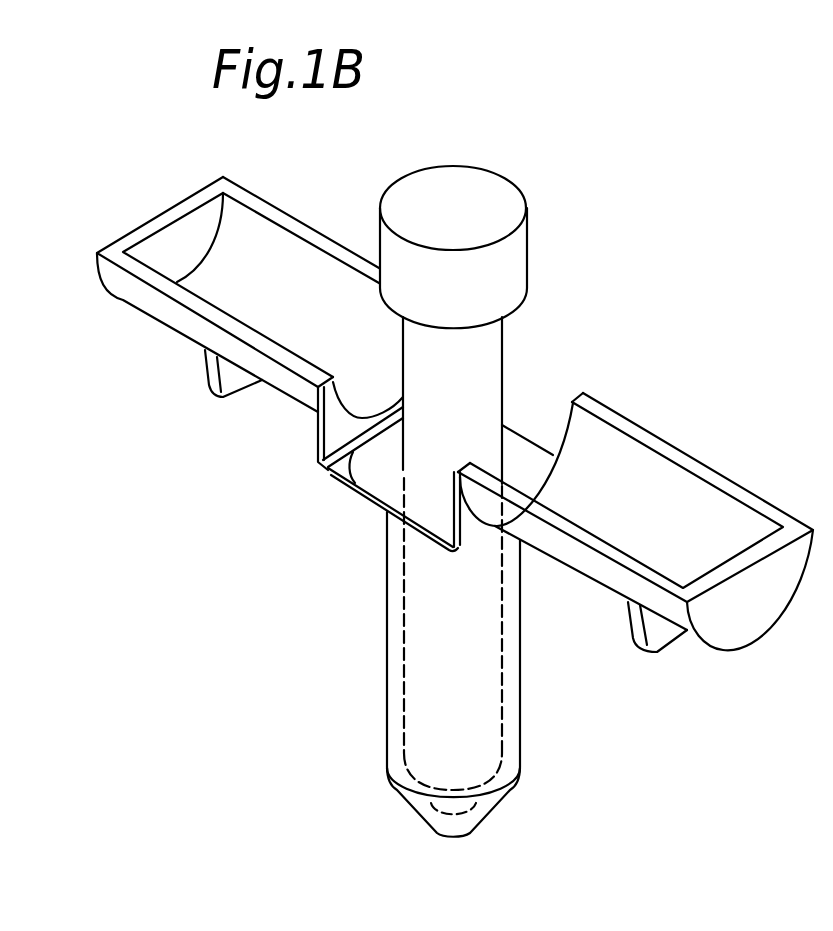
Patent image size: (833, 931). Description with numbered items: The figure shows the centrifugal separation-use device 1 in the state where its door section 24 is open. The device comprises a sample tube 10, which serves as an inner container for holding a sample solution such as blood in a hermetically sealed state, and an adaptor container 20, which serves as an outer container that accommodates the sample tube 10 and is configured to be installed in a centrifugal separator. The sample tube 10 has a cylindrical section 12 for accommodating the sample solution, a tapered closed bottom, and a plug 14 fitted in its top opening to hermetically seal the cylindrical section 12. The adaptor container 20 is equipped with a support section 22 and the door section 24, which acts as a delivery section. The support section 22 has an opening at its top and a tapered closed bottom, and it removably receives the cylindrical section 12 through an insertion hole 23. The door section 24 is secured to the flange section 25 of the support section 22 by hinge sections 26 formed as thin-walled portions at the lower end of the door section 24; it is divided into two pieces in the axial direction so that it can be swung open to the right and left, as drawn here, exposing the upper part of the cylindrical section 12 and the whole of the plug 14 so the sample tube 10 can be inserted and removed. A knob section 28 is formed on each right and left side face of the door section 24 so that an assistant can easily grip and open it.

The centrifugal separation-use device 1 is at (606, 774).
The sample tube 10 is at (510, 366).
The cylindrical section 12 is at (487, 683).
The plug 14 is at (527, 232).
The adaptor container 20 is at (384, 631).
The support section 22 is at (388, 697).
The insertion hole 23 is at (400, 537).
The door section 24 is at (257, 205).
The flange section 25 is at (520, 452).
The hinge sections 26 is at (353, 483).
The knob section 28 is at (235, 391).